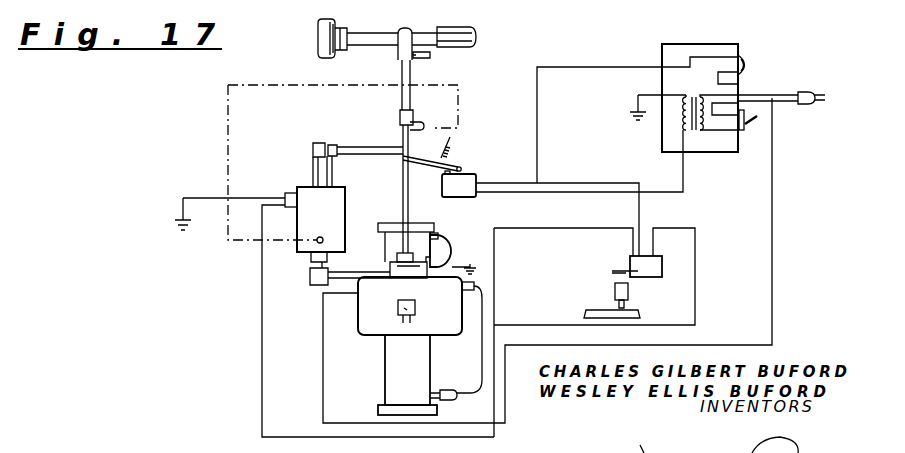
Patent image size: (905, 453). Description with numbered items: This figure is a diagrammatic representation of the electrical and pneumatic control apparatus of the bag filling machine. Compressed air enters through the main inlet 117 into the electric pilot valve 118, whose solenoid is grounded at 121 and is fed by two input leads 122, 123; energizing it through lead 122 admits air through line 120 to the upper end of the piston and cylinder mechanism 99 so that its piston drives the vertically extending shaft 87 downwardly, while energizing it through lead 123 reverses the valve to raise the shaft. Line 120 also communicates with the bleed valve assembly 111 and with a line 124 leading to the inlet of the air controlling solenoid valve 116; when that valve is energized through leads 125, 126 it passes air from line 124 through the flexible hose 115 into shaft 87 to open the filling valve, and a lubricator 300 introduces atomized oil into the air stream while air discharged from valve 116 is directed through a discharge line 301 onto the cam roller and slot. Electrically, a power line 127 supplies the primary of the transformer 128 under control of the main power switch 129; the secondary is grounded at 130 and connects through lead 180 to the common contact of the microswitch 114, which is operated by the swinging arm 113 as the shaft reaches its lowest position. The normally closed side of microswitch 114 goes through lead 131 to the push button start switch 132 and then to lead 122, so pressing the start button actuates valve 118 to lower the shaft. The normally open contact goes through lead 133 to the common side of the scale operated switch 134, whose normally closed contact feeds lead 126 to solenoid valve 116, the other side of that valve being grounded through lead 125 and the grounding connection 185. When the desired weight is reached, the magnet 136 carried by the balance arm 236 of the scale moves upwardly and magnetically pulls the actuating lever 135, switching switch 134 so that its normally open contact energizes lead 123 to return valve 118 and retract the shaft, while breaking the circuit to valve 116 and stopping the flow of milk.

The vertically extending shaft 87 is at (401, 67).
The piston and cylinder mechanism 99 is at (420, 382).
The bleed valve assembly 111 is at (398, 248).
The swinging arm 113 is at (460, 166).
The microswitch 114 is at (476, 175).
The flexible hose 115 is at (258, 84).
The air controlling solenoid valve 116 is at (329, 222).
The main compressed air inlet 117 is at (415, 311).
The electric pilot valve 118 is at (446, 303).
The line to upper end of cylinder 120 is at (450, 250).
The ground connection 121 is at (476, 266).
The input lead 122 is at (341, 294).
The input lead 123 is at (530, 325).
The line to solenoid valve inlet 124 is at (338, 272).
The lead 125 is at (213, 197).
The lead 126 is at (262, 308).
The power line 127 is at (786, 104).
The transformer 128 is at (697, 137).
The main power switch 129 is at (747, 131).
The ground connection 130 is at (634, 114).
The lead 131 is at (616, 67).
The push button start switch 132 is at (750, 60).
The lead 133 is at (615, 183).
The scale operated switch 134 is at (647, 281).
The actuating lever 135 is at (622, 271).
The magnet 136 is at (615, 290).
The lead 180 is at (685, 190).
The grounding connection 185 is at (187, 231).
The balance arm 236 is at (648, 311).
The lubricator 300 is at (404, 309).
The discharge line 301 is at (371, 147).